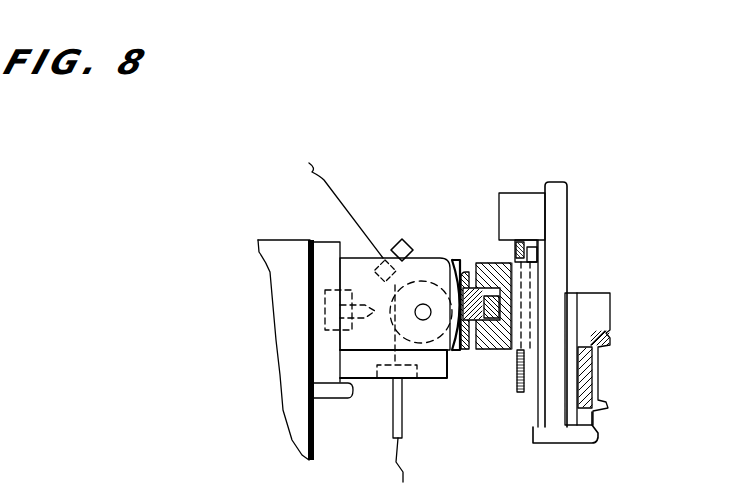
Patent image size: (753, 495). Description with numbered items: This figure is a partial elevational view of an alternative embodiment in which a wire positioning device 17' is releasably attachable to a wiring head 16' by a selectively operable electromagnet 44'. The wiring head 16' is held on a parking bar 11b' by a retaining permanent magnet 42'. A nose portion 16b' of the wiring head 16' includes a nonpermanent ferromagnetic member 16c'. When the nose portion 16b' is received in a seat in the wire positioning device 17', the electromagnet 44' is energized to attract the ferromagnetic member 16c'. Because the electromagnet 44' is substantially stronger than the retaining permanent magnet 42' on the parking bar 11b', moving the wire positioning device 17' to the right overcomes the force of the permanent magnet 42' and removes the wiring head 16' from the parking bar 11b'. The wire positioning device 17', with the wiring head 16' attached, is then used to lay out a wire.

The parking bar 11b' is at (289, 350).
The wiring head 16' is at (380, 322).
The nose portion 16b' is at (470, 328).
The nonpermanent ferromagnetic member 16c' is at (487, 349).
The wire positioning device 17' is at (485, 266).
The retaining permanent magnet 42' is at (303, 325).
The electromagnet 44' is at (536, 287).